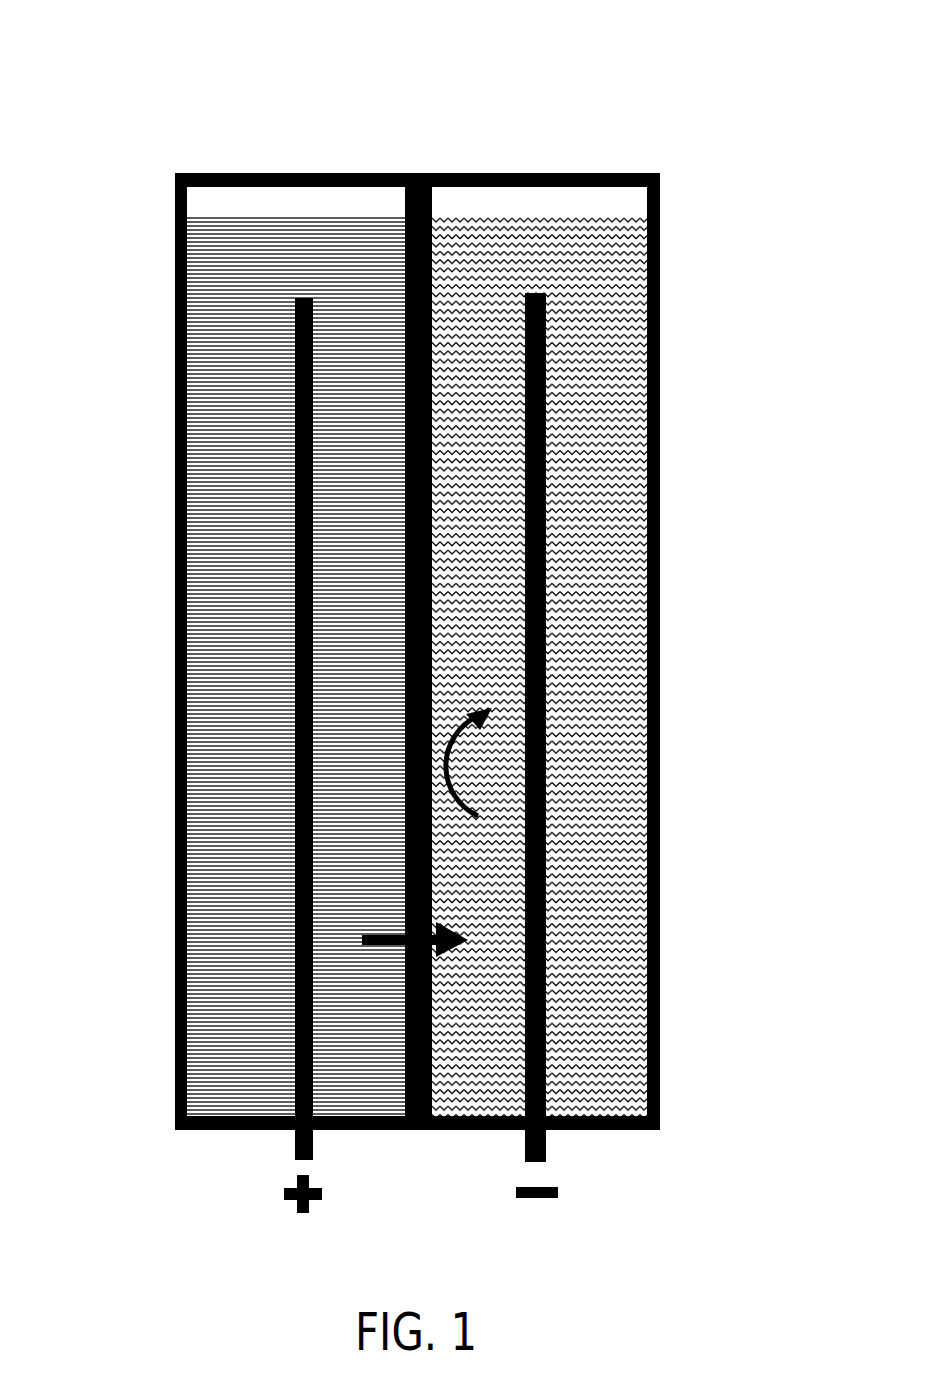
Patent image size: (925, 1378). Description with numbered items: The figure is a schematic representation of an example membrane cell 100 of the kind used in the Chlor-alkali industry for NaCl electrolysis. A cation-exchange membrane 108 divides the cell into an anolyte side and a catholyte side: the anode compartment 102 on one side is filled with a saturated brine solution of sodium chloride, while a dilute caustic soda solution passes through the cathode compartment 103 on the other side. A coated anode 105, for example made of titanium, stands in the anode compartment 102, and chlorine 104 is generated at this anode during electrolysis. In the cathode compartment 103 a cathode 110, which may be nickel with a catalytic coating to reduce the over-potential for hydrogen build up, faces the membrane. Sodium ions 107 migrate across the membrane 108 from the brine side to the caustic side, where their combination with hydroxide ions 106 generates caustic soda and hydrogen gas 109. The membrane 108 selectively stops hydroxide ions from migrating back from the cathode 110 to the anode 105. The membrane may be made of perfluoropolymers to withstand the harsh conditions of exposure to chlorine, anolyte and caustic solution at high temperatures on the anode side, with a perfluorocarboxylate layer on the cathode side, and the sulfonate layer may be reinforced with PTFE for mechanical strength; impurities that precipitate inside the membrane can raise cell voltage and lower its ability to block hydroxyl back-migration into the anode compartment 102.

The membrane cell 100 is at (134, 62).
The anode compartment 102 is at (178, 496).
The cathode compartment 103 is at (661, 462).
The chlorine 104 is at (318, 210).
The anode 105 is at (294, 1131).
The hydroxide ions 106 is at (176, 710).
The sodium ions 107 is at (661, 905).
The cation-exchange membrane 108 is at (662, 314).
The hydrogen gas 109 is at (517, 212).
The cathode 110 is at (547, 1131).